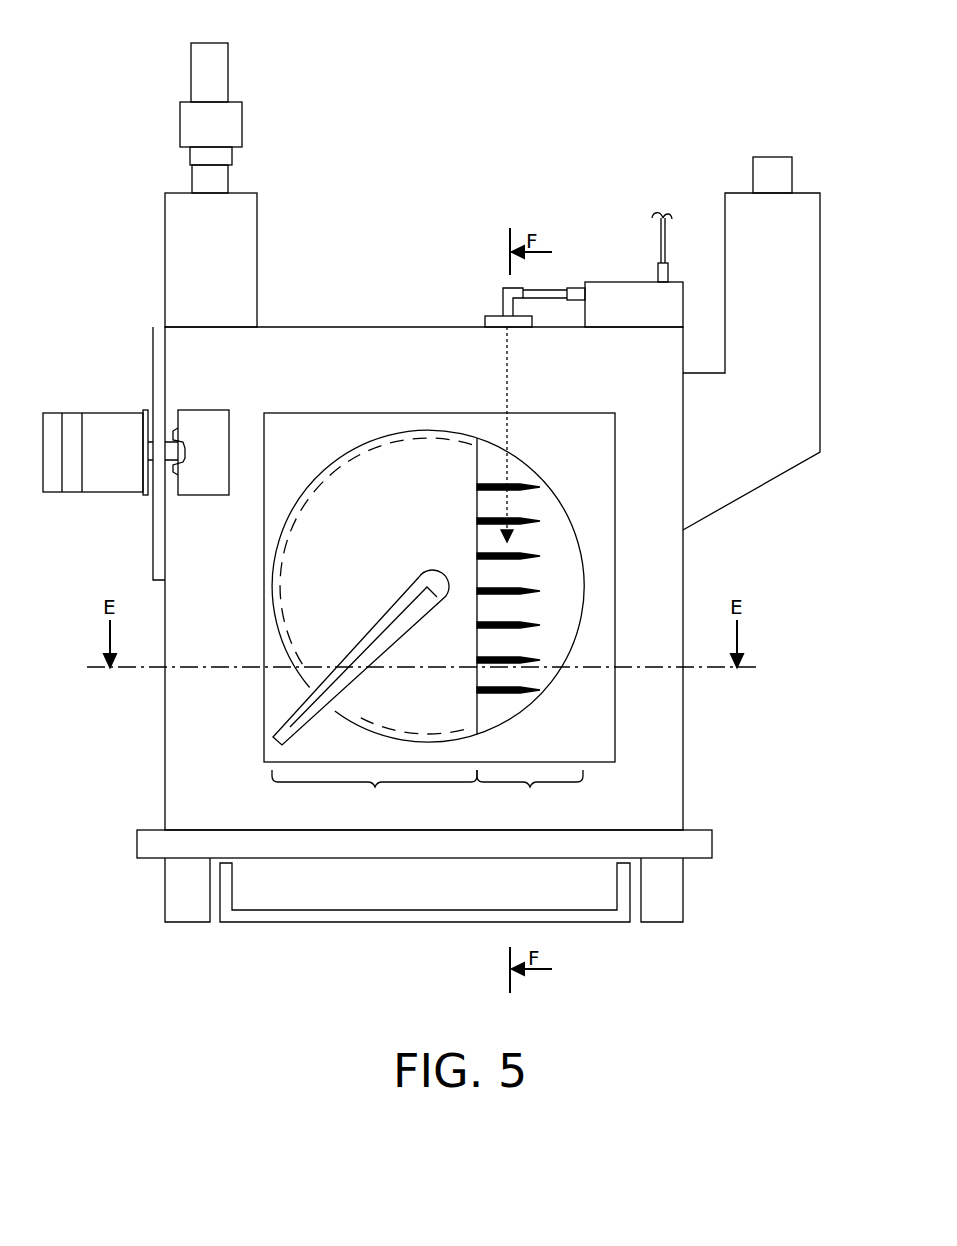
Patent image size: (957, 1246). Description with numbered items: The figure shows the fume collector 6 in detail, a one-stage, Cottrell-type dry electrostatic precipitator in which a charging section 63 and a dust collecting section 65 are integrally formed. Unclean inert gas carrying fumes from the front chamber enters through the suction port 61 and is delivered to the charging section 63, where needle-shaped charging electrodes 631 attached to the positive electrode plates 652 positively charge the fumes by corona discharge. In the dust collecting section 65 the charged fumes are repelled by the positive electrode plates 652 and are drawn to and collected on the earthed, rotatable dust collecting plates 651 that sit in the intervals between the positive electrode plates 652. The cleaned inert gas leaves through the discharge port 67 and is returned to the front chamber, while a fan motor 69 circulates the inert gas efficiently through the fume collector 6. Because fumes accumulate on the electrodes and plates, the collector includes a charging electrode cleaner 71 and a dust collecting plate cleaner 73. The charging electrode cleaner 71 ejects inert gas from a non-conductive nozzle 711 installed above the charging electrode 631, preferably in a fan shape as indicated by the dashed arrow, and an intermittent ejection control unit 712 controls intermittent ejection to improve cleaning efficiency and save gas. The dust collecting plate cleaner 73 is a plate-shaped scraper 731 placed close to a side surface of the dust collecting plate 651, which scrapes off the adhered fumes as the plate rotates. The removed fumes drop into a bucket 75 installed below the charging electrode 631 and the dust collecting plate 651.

The fume collector 6 is at (603, 106).
The suction port 61 is at (790, 164).
The charging section 63 is at (530, 571).
The charging electrode 631 is at (497, 694).
The dust collecting section 65 is at (445, 622).
The dust collecting plate 651 is at (555, 623).
The positive electrode plate 652 is at (363, 722).
The discharge port 67 is at (220, 55).
The fan motor 69 is at (128, 417).
The charging electrode cleaner 71 is at (548, 263).
The nozzle 711 is at (494, 312).
The intermittent ejection control unit 712 is at (599, 290).
The dust collecting plate cleaner 73 is at (327, 657).
The scraper 731 is at (313, 711).
The bucket 75 is at (603, 915).